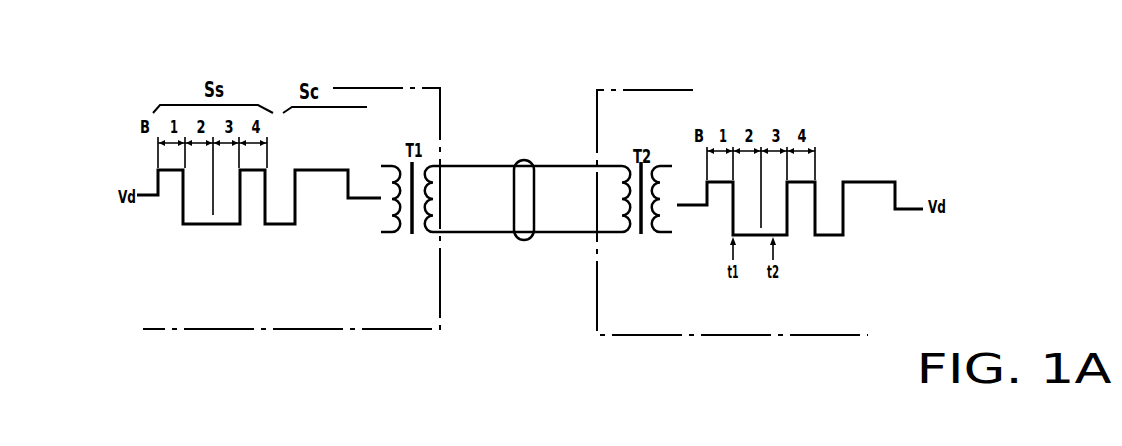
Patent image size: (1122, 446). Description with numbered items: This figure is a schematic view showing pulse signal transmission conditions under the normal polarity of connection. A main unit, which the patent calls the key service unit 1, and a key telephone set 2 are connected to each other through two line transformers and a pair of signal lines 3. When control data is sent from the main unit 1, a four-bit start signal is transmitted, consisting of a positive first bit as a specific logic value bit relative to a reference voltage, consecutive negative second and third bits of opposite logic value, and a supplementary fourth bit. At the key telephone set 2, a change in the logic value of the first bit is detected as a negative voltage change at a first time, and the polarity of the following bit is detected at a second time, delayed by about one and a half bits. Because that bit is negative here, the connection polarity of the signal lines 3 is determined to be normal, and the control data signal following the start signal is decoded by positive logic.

The main unit (KSU) 1 is at (421, 88).
The key telephone set (ST) 2 is at (619, 90).
The pair of signal lines 3 is at (529, 160).